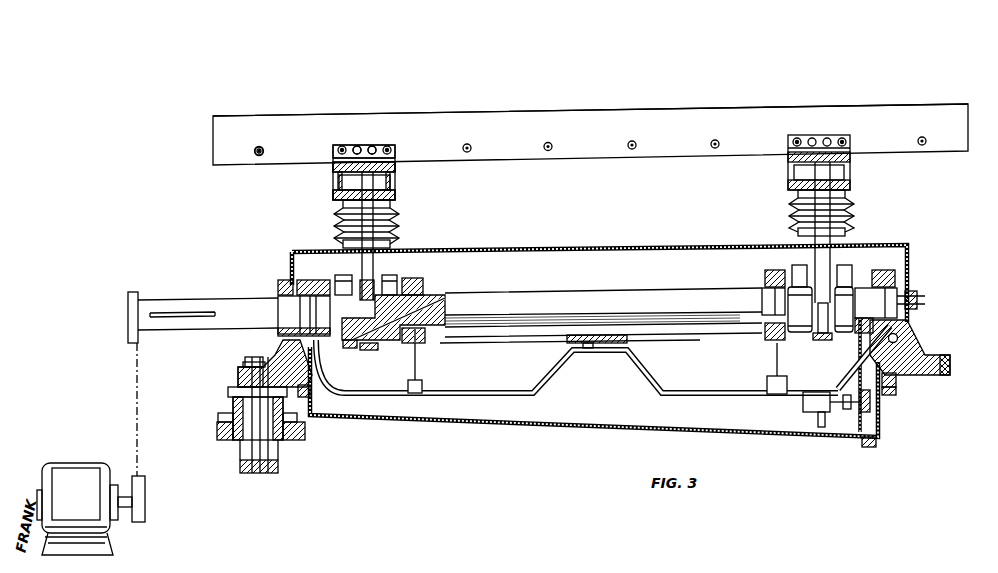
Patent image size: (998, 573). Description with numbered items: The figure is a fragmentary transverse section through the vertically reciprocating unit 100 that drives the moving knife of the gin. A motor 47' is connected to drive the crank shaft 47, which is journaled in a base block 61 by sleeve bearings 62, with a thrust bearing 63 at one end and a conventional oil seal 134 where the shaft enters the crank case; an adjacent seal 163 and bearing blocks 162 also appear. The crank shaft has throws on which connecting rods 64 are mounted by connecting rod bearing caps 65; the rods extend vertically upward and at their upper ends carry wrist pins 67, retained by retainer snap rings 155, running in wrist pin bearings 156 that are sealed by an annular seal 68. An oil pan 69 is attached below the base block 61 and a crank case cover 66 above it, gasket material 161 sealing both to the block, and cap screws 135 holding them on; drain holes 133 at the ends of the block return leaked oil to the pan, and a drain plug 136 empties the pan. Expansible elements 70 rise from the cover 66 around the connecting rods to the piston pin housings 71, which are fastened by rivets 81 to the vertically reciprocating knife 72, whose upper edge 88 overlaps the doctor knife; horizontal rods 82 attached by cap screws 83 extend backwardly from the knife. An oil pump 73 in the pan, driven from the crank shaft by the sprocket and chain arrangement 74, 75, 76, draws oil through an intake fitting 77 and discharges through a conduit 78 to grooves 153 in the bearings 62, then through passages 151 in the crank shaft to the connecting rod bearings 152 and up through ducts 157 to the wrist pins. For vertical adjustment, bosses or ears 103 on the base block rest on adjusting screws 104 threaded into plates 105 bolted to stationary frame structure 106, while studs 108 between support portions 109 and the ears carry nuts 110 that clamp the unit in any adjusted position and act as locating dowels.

The vertically reciprocating unit 100 is at (119, 87).
The vertically reciprocating knife 72 is at (699, 118).
The upper edge of moving knife 88 is at (585, 113).
The rods 82 is at (260, 146).
The cap screws 83 is at (264, 150).
The rivets 81 is at (372, 146).
The wrist pin bearings 156 is at (395, 163).
The piston pin housings 71 is at (396, 172).
The wrist pins 67 is at (391, 183).
The retainer snap rings 155 is at (338, 188).
The annular seal 68 is at (335, 174).
The expansible elements 70 is at (334, 222).
The sprocket and chain arrangement 74 is at (851, 274).
The crank case cover 66 is at (607, 249).
The oil pan 69 is at (475, 426).
The crank shaft 47 is at (203, 378).
The motor 47' is at (91, 491).
The seal 163 is at (284, 280).
The thrust bearing 63 is at (327, 282).
The oil seal 134 is at (278, 294).
The passages or ducts 157 is at (358, 278).
The connecting rods 64 is at (375, 268).
The grooves 153 is at (448, 313).
The bearing blocks 162 is at (424, 285).
The sleeve bearings 62 is at (432, 297).
The oil ducts or passages 151 is at (404, 344).
The connecting rod bearings 152 is at (351, 349).
The connecting rod bearing caps 65 is at (370, 352).
The conduit 78 is at (568, 367).
The sprocket and chain arrangement 76 is at (852, 350).
The drain holes 133 is at (905, 345).
The gasket material 161 is at (922, 303).
The cap screws 135 is at (921, 296).
The base block 61 is at (253, 358).
The nuts 110 is at (241, 365).
The bosses or ears 103 is at (238, 383).
The adjusting screws 104 is at (228, 404).
The plates 105 is at (219, 417).
The stationary frame structure 106 is at (218, 433).
The studs 108 is at (277, 451).
The support portions 109 is at (240, 466).
The oil pump 73 is at (803, 404).
The intake fitting 77 is at (818, 420).
The sprocket and chain arrangement 75 is at (878, 423).
The drain plug 136 is at (869, 441).